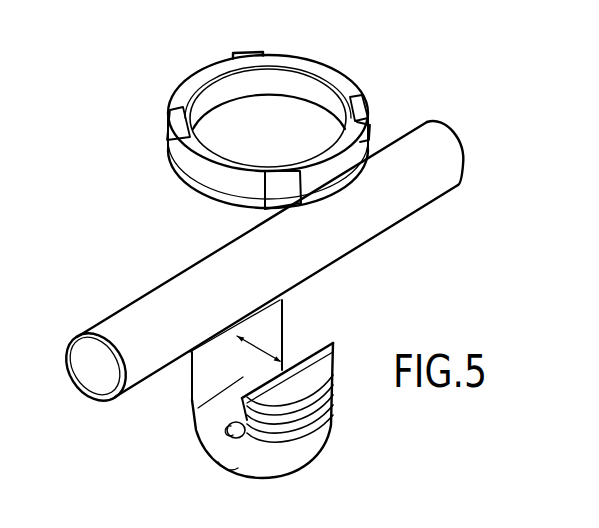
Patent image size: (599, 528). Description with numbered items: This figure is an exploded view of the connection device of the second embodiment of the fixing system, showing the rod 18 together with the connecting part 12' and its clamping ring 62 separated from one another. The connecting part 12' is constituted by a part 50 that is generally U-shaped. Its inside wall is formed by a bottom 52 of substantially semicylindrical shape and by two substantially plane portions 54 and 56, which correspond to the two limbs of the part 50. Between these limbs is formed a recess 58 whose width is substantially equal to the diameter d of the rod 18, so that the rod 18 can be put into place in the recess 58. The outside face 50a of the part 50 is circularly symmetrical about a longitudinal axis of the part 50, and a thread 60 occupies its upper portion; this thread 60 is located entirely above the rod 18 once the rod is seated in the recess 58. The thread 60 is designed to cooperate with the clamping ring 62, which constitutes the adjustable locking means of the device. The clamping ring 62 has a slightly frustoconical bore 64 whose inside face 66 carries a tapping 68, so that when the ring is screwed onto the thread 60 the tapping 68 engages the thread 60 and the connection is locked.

The connecting part 12' is at (303, 256).
The rod 18 is at (464, 136).
The diameter of the rod d is at (92, 378).
The part 50 is at (328, 465).
The outside face 50a is at (328, 420).
The bottom 52 is at (222, 466).
The plane portion 54 is at (240, 418).
The plane portion 56 is at (278, 330).
The recess 58 is at (224, 404).
The thread 60 is at (336, 363).
The clamping ring 62 is at (360, 72).
The frustoconical bore 64 is at (216, 93).
The inside face 66 is at (203, 108).
The tapping 68 is at (274, 82).